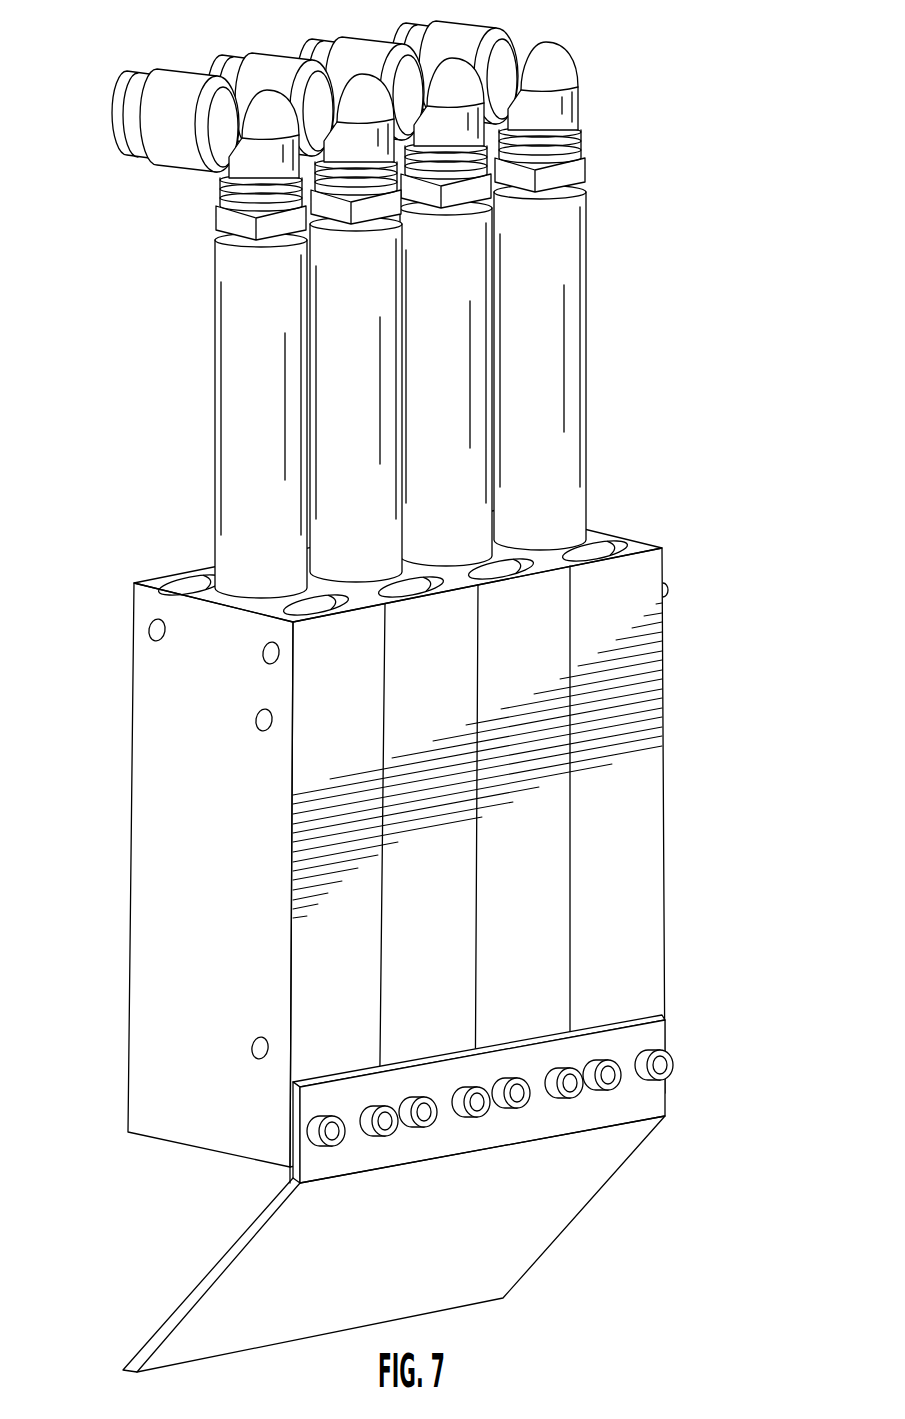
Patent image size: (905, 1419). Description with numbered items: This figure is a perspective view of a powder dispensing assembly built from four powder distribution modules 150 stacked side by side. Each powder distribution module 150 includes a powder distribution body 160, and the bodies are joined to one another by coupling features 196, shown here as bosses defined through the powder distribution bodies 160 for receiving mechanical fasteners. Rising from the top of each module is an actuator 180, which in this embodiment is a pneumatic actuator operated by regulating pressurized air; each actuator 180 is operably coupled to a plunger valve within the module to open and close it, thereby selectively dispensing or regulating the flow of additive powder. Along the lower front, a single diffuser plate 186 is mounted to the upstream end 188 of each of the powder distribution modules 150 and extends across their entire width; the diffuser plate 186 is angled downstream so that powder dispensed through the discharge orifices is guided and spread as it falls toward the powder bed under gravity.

The powder distribution module 150 is at (542, 833).
The powder distribution body 160 is at (160, 836).
The actuator 180 is at (542, 298).
The diffuser plate 186 is at (553, 1220).
The upstream end 188 is at (588, 1000).
The coupling features 196 is at (272, 720).